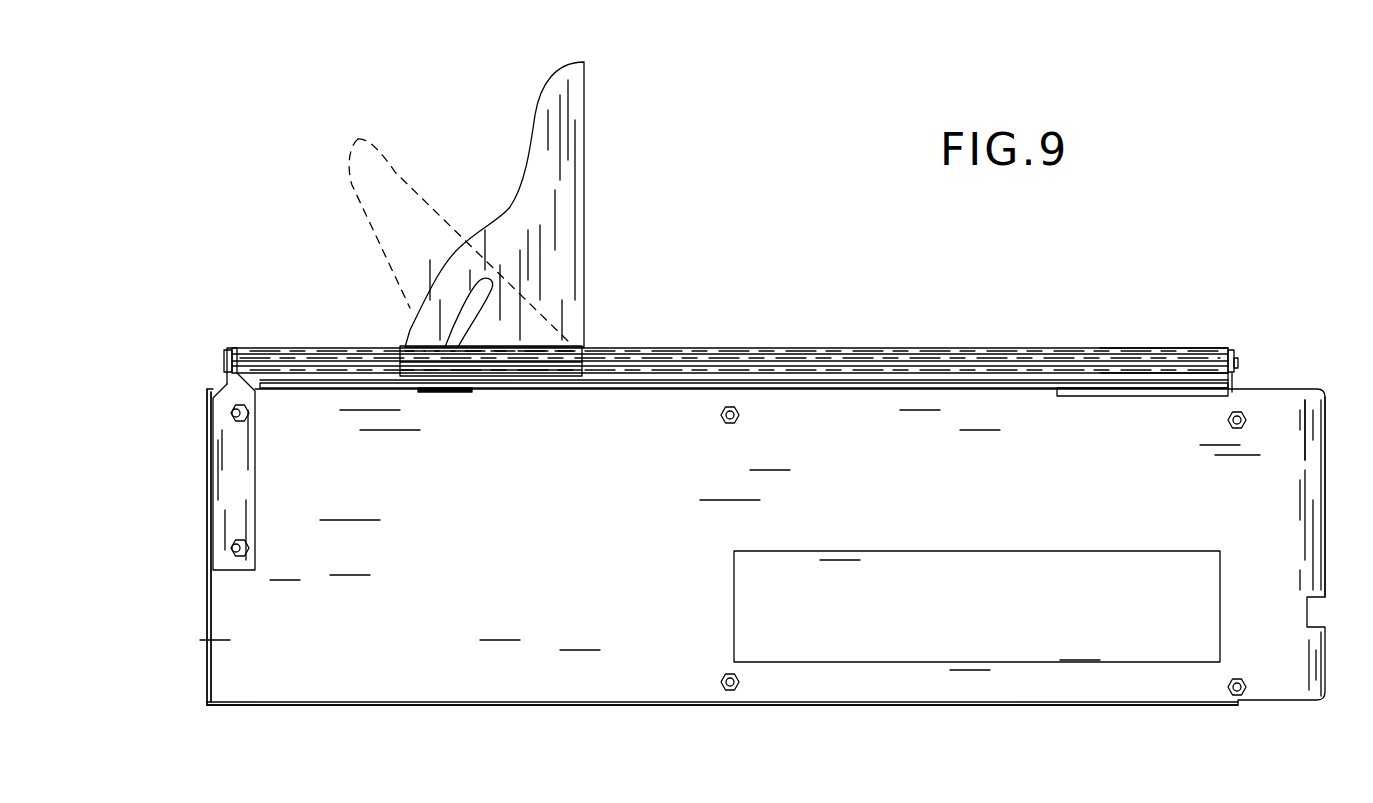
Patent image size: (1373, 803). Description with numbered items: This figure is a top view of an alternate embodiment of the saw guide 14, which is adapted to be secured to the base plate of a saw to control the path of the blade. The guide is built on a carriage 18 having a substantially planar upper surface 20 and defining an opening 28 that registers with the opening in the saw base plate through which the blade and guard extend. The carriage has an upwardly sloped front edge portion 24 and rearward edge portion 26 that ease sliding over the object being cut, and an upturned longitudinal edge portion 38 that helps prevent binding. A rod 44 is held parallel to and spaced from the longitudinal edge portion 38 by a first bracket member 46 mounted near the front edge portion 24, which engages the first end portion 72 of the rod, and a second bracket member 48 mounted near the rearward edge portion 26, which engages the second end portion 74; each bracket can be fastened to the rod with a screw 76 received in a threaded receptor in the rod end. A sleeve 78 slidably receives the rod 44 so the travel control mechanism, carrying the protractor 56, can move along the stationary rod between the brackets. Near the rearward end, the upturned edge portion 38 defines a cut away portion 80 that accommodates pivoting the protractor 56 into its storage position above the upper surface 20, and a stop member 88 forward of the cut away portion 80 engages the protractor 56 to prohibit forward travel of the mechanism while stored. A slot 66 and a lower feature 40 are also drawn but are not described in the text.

The saw guide 14 is at (745, 252).
The protractor 56 is at (590, 218).
The slot 66 is at (458, 300).
The sleeve 78 is at (553, 364).
The longitudinal edge portion 38 is at (300, 383).
The rod 44 is at (1020, 356).
The first end portion of the rod 72 is at (1202, 356).
The screw 76 is at (227, 354).
The second end portion of the rod 74 is at (252, 348).
The second bracket member 48 is at (233, 402).
The cut away portion 80 is at (372, 388).
The stop member 88 is at (447, 392).
The first bracket member 46 is at (1195, 396).
The carriage 18 is at (580, 507).
The front edge portion 24 is at (1325, 490).
The rearward edge portion 26 is at (207, 636).
The upper surface 20 is at (595, 680).
The bottom flange 40 is at (822, 705).
The opening 28 is at (1060, 662).